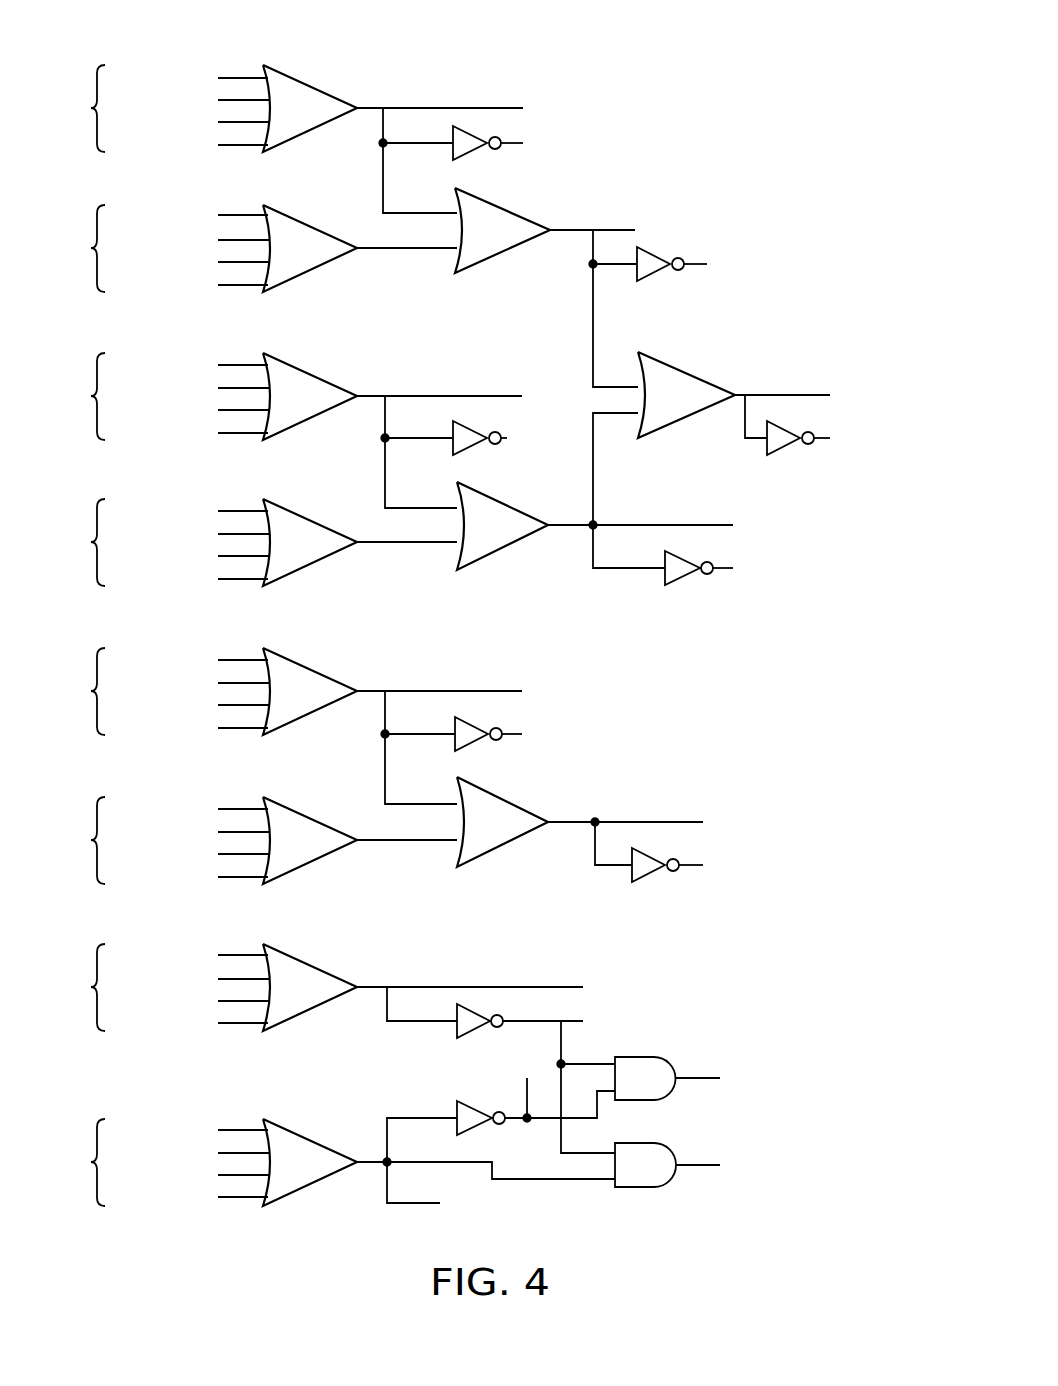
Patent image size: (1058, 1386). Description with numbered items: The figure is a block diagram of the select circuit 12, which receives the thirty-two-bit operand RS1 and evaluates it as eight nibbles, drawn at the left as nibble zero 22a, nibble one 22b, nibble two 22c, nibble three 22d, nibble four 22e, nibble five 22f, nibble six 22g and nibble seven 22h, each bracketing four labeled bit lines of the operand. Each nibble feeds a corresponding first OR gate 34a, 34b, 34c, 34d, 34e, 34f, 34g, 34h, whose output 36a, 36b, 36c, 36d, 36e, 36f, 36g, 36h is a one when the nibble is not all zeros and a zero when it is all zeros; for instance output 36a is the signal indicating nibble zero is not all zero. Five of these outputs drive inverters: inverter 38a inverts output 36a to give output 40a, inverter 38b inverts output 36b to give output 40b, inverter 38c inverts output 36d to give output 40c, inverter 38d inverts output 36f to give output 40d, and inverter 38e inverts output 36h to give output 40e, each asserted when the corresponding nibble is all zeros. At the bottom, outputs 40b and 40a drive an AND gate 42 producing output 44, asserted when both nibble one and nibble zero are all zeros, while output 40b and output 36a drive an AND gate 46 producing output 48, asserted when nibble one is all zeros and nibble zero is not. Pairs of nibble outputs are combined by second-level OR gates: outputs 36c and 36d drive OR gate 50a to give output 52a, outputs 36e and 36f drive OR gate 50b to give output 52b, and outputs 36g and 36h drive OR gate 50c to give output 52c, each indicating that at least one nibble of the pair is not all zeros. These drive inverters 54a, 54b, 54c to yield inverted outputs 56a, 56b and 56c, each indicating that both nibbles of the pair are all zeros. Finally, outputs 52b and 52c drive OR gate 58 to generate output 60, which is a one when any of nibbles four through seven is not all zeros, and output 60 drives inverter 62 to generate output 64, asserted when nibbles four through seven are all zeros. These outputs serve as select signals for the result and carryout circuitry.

The select circuit 12 is at (701, 44).
The nibble 0 22a is at (90, 1162).
The nibble 1 22b is at (90, 987).
The nibble 2 22c is at (90, 840).
The nibble 3 22d is at (90, 691).
The nibble 4 22e is at (90, 542).
The nibble 5 22f is at (90, 396).
The nibble 6 22g is at (90, 248).
The nibble 7 22h is at (90, 108).
The first OR gate 34a is at (300, 1193).
The first OR gate 34b is at (300, 1018).
The first OR gate 34c is at (296, 872).
The first OR gate 34d is at (287, 724).
The first OR gate 34e is at (290, 576).
The first OR gate 34f is at (285, 428).
The first OR gate 34g is at (298, 280).
The first OR gate 34h is at (287, 140).
The output 36a is at (370, 1158).
The output 36b is at (372, 987).
The output 36c is at (378, 841).
The output 36d is at (375, 690).
The output 36e is at (378, 541).
The output 36f is at (437, 393).
The output 36g is at (383, 248).
The output 36h is at (368, 108).
The inverter 38a is at (455, 1103).
The inverter 38b is at (455, 1030).
The inverter 38c is at (470, 750).
The inverter 38d is at (465, 455).
The inverter 38e is at (466, 158).
The output 40a is at (500, 1052).
The output 40b is at (655, 1025).
The output 40c is at (575, 745).
The output 40d is at (535, 440).
The output 40e is at (567, 152).
The AND gate 42 is at (672, 1057).
The output 44 is at (748, 1066).
The AND gate 46 is at (635, 1192).
The output 48 is at (790, 1182).
The OR gate 50a is at (485, 855).
The OR gate 50b is at (475, 563).
The OR gate 50c is at (475, 268).
The output 52a is at (757, 812).
The output 52b is at (805, 538).
The output 52c is at (742, 230).
The inverter 54a is at (645, 882).
The inverter 54b is at (685, 582).
The inverter 54c is at (650, 280).
The inverted output 56a is at (740, 878).
The inverted output 56b is at (772, 580).
The inverted output 56c is at (768, 274).
The OR gate 58 is at (700, 377).
The output 60 is at (886, 383).
The inverter 62 is at (778, 453).
The output 64 is at (878, 452).